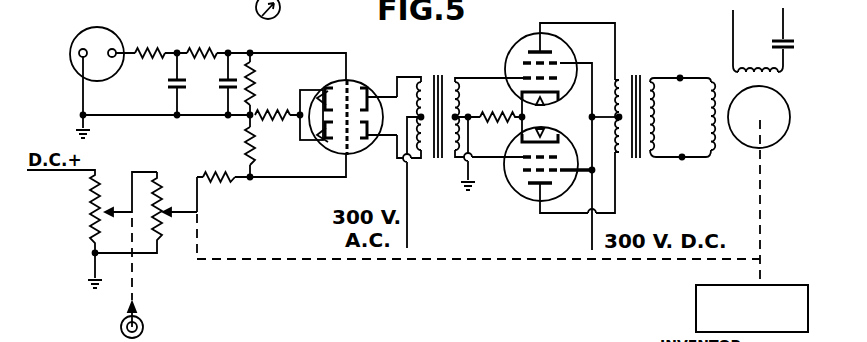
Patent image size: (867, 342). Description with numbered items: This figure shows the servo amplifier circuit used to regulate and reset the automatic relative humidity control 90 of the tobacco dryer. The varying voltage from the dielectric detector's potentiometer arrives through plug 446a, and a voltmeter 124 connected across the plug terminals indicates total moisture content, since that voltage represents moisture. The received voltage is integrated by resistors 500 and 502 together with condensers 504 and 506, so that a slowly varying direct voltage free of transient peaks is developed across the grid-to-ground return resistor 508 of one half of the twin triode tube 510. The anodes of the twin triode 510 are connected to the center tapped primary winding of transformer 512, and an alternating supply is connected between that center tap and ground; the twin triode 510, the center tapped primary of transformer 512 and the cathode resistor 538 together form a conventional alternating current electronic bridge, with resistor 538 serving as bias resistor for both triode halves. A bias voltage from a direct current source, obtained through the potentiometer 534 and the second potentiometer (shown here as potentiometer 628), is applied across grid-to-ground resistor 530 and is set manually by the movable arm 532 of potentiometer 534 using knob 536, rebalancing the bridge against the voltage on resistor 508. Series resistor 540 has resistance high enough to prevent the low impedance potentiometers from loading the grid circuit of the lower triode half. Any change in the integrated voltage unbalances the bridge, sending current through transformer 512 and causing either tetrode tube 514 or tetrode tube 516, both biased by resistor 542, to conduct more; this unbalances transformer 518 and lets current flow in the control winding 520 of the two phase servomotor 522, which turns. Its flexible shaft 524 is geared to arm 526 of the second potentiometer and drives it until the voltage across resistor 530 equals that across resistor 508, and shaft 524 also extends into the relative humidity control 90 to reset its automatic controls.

The plug 446a is at (88, 45).
The resistor 500 is at (150, 50).
The resistor 502 is at (216, 50).
The condenser 504 is at (170, 92).
The condenser 506 is at (222, 92).
The grid-to-ground return resistor 508 is at (254, 98).
The twin triode tube 510 is at (356, 80).
The center tapped transformer 512 is at (441, 78).
The tetrode tube 514 is at (523, 46).
The tetrode tube 516 is at (526, 180).
The transformer 518 is at (639, 78).
The control winding 520 is at (708, 154).
The two phase servomotor 522 is at (770, 128).
The flexible shaft 524 is at (196, 256).
The arm 526 is at (182, 212).
The grid-to-ground resistor 530 is at (255, 150).
The movable arm 532 is at (123, 206).
The potentiometer 534 is at (93, 224).
The knob 536 is at (143, 326).
The cathode resistor 538 is at (282, 122).
The series resistor 540 is at (235, 170).
The resistor 542 is at (505, 112).
The potentiometer 628 is at (160, 229).
The relative humidity control 90 is at (694, 305).
The voltmeter 124 is at (280, 8).